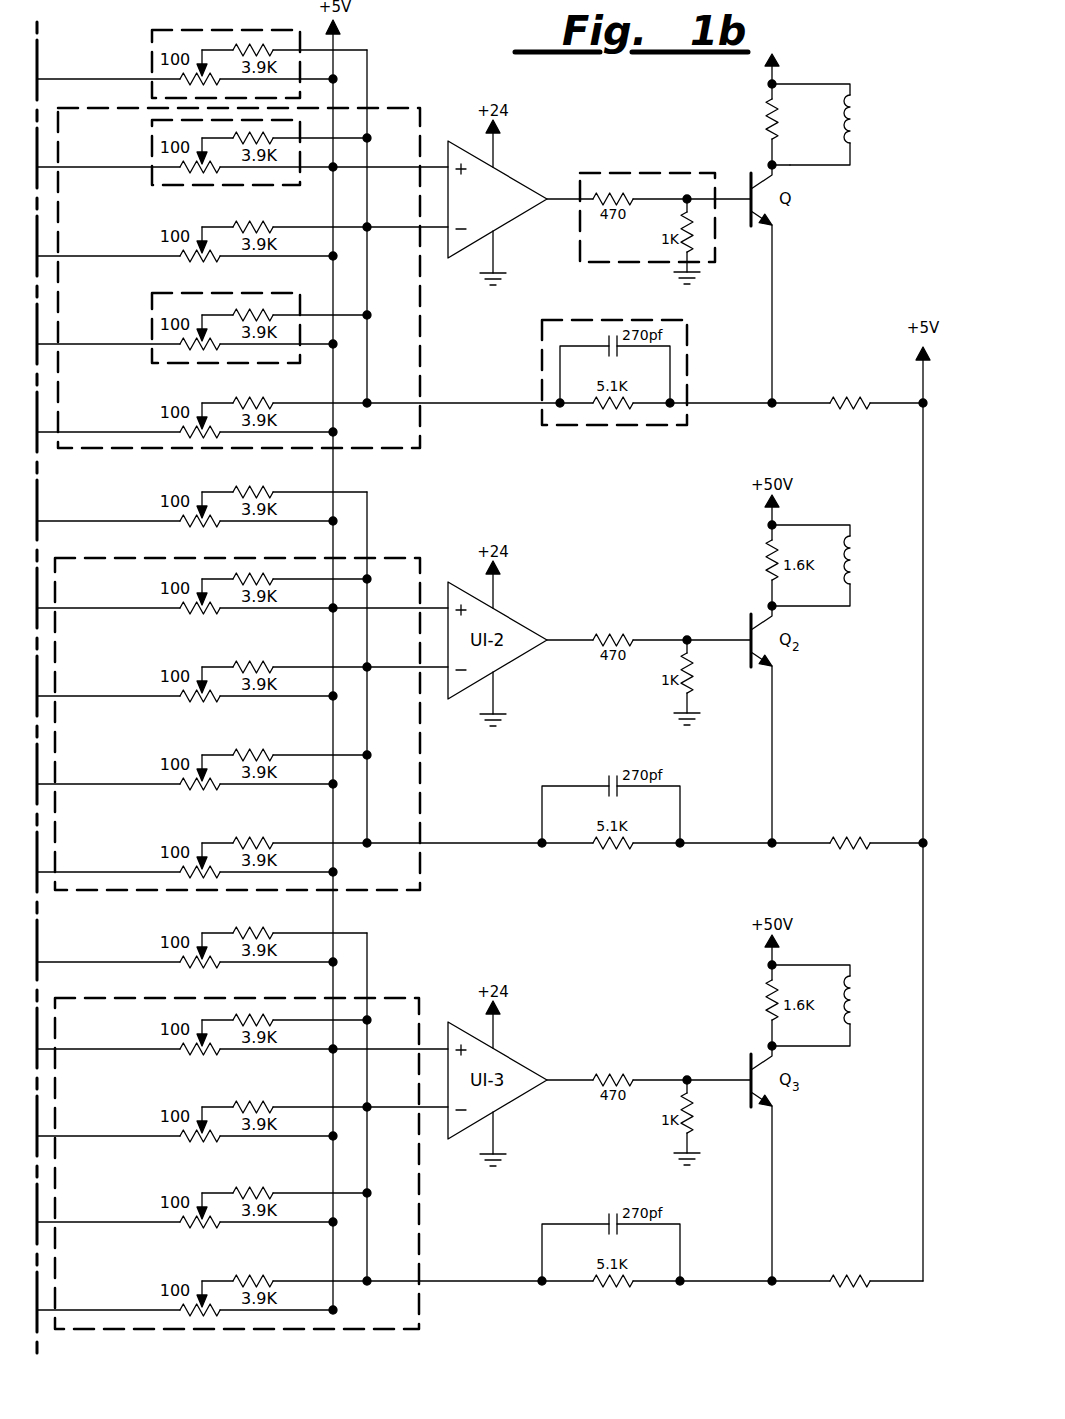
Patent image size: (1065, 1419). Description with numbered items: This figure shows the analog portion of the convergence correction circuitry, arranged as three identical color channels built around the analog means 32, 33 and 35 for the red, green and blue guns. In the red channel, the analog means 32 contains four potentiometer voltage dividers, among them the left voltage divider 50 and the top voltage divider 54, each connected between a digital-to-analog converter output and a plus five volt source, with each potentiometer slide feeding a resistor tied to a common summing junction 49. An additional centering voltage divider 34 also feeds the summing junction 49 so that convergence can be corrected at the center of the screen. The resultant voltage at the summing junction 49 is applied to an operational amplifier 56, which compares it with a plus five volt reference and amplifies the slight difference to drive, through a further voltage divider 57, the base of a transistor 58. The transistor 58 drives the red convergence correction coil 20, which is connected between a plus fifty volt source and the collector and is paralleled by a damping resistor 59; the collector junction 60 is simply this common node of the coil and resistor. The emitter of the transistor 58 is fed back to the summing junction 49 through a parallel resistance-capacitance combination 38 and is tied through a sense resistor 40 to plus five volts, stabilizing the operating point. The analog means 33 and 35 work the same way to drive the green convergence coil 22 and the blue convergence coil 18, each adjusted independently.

The centering voltage divider 34 is at (153, 30).
The analog means 32 is at (243, 257).
The voltage divider 50 is at (152, 182).
The summing junction 49 is at (368, 227).
The voltage divider 54 is at (152, 293).
The operational amplifier 56 is at (506, 175).
The voltage divider 57 is at (628, 173).
The parallel resistance-capacitance combination 38 is at (592, 320).
The resistor 59 is at (766, 132).
The collector junction 60 is at (770, 166).
The red convergence correction coil 20 is at (860, 140).
The transistor 58 is at (760, 228).
The sense resistor 40 is at (845, 402).
The analog means 33 is at (406, 558).
The convergence coil 22 is at (858, 585).
The analog means 35 is at (399, 998).
The convergence coil 18 is at (858, 1025).